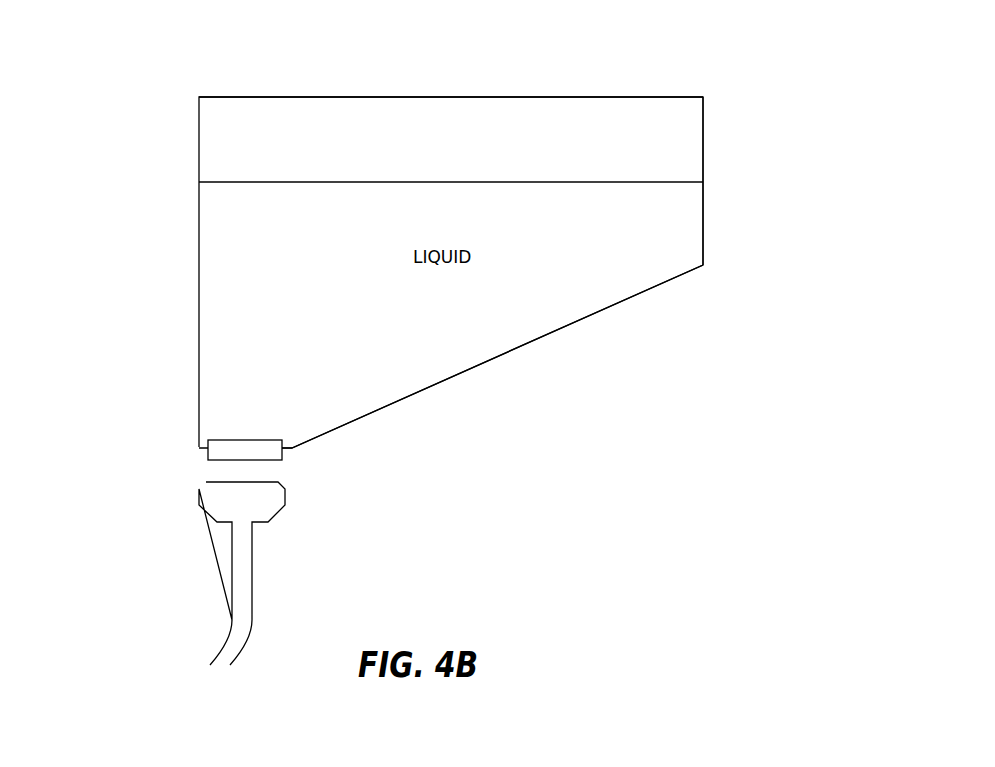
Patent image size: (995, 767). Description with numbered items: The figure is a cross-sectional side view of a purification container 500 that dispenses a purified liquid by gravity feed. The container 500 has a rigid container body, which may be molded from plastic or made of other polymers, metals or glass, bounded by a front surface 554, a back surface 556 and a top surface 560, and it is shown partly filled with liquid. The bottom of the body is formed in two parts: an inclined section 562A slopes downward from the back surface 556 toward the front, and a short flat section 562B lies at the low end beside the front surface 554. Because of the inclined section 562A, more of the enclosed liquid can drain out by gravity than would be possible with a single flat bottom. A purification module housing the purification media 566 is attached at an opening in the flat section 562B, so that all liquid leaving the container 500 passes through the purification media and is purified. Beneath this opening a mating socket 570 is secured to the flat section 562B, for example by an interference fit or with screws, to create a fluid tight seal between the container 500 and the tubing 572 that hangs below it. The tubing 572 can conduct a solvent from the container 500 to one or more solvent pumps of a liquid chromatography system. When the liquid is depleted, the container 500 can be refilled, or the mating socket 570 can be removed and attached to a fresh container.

The purification container 500 is at (112, 144).
The front surface 554 is at (199, 220).
The back surface 556 is at (703, 147).
The top surface 560 is at (590, 92).
The inclined section 562A is at (473, 368).
The flat section 562B is at (290, 448).
The purification module 566 is at (217, 457).
The mating socket 570 is at (267, 523).
The tubing 572 is at (228, 592).